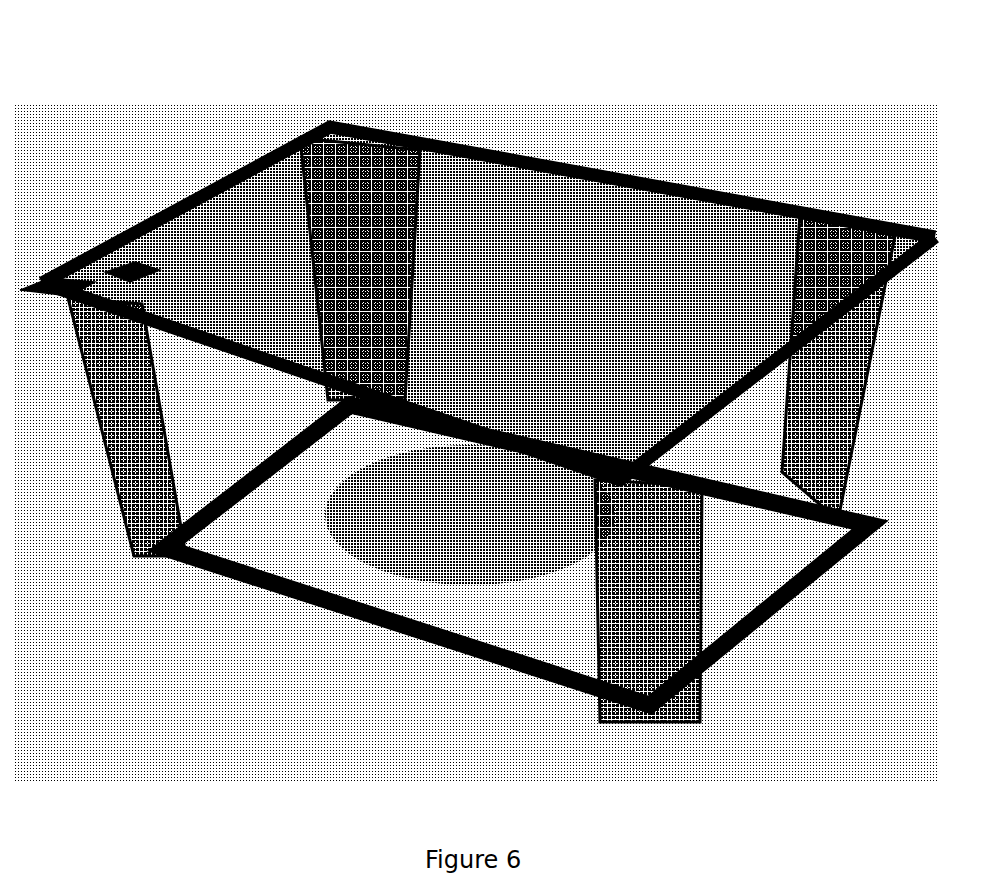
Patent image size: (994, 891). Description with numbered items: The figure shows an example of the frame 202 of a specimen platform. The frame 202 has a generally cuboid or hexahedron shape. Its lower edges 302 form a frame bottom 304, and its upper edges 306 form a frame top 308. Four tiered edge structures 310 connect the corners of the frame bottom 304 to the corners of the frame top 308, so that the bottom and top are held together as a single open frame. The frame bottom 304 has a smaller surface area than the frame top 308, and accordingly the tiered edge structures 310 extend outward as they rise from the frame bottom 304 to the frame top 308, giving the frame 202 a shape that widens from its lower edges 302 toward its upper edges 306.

The frame 202 is at (416, 77).
The lower edges 302 is at (240, 513).
The frame bottom 304 is at (521, 631).
The upper edges 306 is at (200, 200).
The frame top 308 is at (767, 349).
The tiered edge structures 310 is at (340, 396).